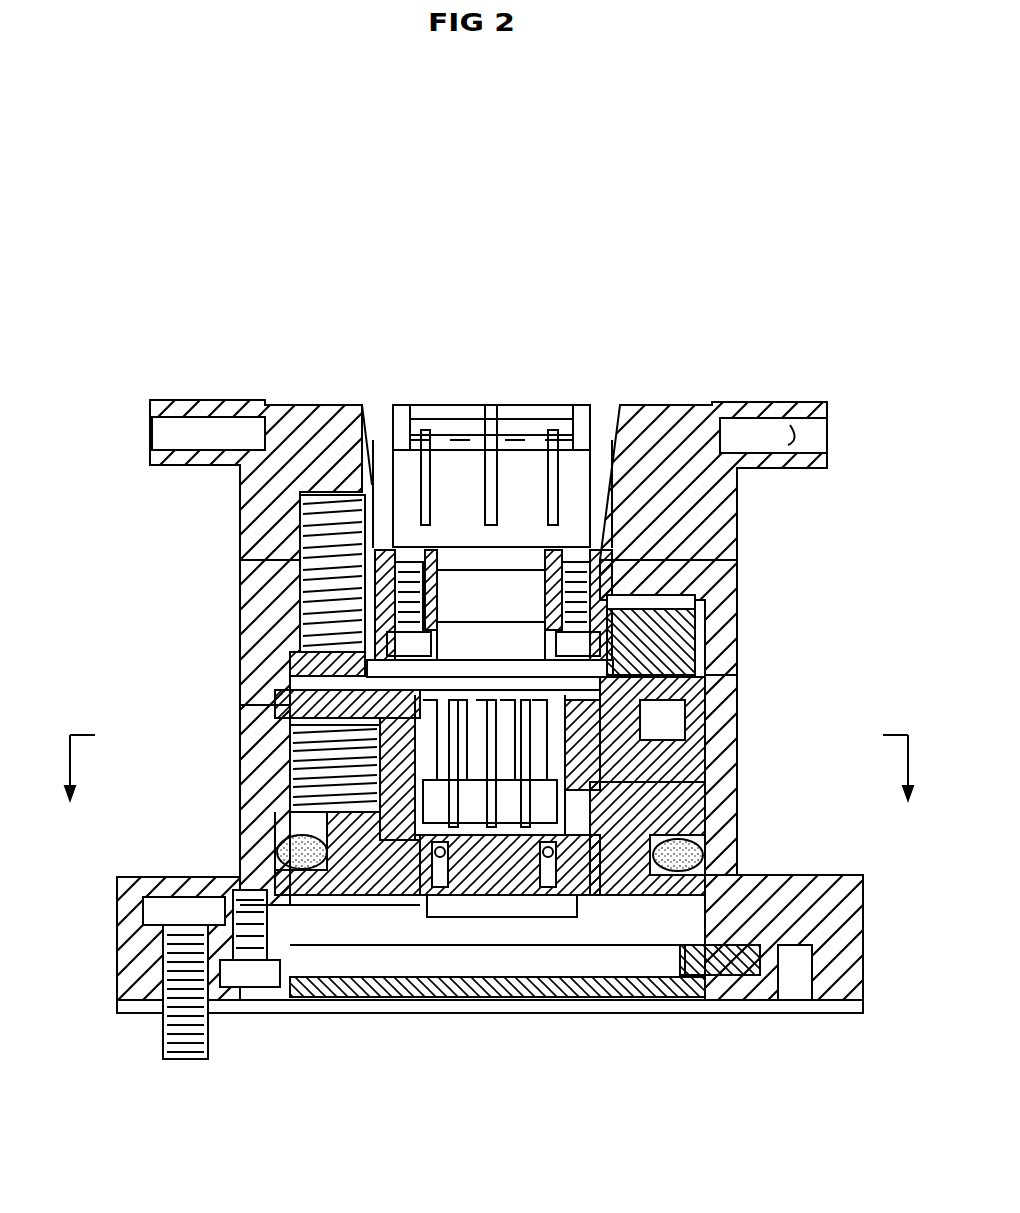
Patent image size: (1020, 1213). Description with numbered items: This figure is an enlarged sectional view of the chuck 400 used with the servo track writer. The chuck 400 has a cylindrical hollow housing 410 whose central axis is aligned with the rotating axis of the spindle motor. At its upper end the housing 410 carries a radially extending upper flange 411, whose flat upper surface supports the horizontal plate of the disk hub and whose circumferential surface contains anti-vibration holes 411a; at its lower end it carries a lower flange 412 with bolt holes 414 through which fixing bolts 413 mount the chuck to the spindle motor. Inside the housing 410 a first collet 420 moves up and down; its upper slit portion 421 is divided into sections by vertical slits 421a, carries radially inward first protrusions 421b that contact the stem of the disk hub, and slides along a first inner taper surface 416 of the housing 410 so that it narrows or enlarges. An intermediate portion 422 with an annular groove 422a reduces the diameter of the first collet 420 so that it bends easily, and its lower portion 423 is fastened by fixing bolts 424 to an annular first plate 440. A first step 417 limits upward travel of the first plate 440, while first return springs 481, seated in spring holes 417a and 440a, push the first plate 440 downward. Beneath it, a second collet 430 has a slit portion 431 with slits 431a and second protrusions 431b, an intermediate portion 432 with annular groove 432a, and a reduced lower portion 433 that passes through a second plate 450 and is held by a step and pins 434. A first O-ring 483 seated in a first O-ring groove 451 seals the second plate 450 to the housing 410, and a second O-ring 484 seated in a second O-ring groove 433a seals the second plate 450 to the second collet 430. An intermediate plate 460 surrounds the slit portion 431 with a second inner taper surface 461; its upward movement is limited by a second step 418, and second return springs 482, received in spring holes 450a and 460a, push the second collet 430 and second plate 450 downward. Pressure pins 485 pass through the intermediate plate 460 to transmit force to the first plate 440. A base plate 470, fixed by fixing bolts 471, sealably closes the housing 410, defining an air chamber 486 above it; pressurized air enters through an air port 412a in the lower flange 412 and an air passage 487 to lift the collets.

The chuck 400 is at (319, 184).
The housing 410 is at (237, 600).
The upper flange 411 is at (755, 402).
The anti-vibration holes 411a is at (790, 436).
The lower flange 412 is at (800, 880).
The air port 412a is at (795, 1002).
The fixing bolts 413 is at (185, 900).
The bolt holes 414 is at (117, 950).
The first inner taper surface 416 is at (378, 404).
The first step 417 is at (672, 556).
The spring hole 417a is at (300, 556).
The second step 418 is at (690, 680).
The first collet 420 is at (630, 540).
The slit portion 421 is at (491, 417).
The slits 421a is at (495, 430).
The first protrusions 421b is at (430, 440).
The intermediate portion 422 is at (575, 470).
The annular groove 422a is at (372, 480).
The lower portion 423 is at (440, 598).
The fixing bolts 424 is at (440, 641).
The second collet 430 is at (560, 768).
The slit portion 431 is at (379, 899).
The slits 431a is at (455, 895).
The second protrusions 431b is at (290, 690).
The intermediate portion 432 is at (453, 830).
The annular groove 432a is at (440, 887).
The lower portion 433 is at (491, 830).
The second O-ring groove 433a is at (440, 840).
The pins 434 is at (548, 860).
The first plate 440 is at (700, 600).
The spring hole 440a is at (300, 636).
The second plate 450 is at (705, 790).
The spring hole 450a is at (300, 782).
The first O-ring groove 451 is at (305, 910).
The intermediate plate 460 is at (705, 720).
The spring hole 460a is at (275, 700).
The second inner taper surface 461 is at (420, 705).
The base plate 470 is at (695, 1013).
The fixing bolts 471 is at (252, 988).
The first return springs 481 is at (305, 530).
The second return springs 482 is at (330, 765).
The first O-ring 483 is at (300, 850).
The second O-ring 484 is at (375, 895).
The pressure pins 485 is at (695, 616).
The air chamber 486 is at (630, 985).
The air passage 487 is at (722, 980).